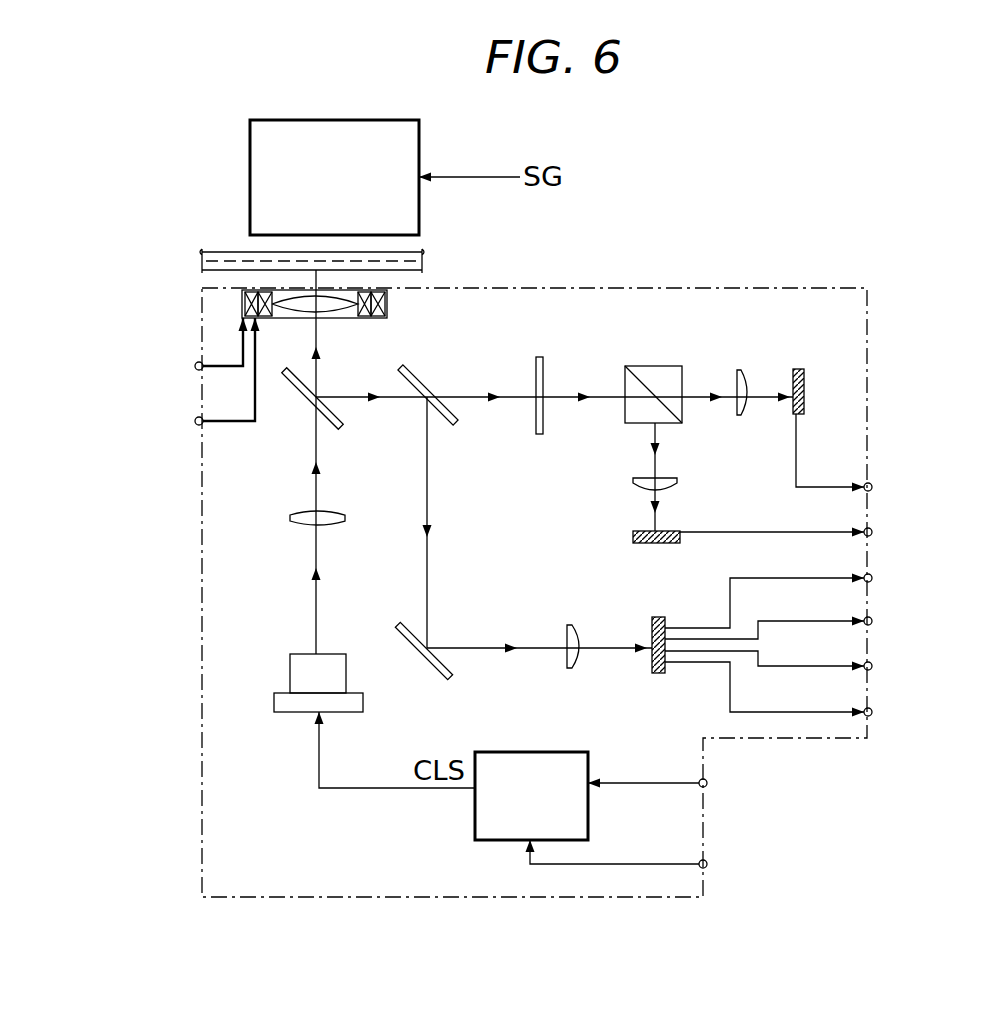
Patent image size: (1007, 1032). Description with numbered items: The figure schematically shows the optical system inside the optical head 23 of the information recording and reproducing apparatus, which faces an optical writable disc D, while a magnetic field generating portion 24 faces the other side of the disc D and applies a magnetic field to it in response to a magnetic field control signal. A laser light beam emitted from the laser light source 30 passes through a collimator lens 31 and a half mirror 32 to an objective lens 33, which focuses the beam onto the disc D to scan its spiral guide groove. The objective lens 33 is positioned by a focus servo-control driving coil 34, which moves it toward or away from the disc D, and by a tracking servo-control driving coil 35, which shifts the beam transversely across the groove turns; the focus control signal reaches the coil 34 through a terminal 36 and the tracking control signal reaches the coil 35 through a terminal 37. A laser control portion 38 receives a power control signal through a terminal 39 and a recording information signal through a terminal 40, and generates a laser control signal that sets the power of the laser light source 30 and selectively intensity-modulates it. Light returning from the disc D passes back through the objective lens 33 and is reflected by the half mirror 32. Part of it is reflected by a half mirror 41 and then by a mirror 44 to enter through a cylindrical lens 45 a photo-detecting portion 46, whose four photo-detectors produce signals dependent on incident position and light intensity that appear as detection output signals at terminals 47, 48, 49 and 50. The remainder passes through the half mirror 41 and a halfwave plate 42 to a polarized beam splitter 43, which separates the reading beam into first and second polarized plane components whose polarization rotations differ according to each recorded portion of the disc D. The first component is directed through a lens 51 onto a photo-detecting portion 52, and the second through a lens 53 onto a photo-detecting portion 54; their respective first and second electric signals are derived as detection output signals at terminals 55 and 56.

The optical head 23 is at (203, 870).
The magnetic field generating portion 24 is at (250, 196).
The optical writable disc D is at (214, 252).
The laser light source 30 is at (290, 665).
The collimator lens 31 is at (306, 524).
The half mirror 32 is at (336, 430).
The objective lens 33 is at (333, 307).
The focus servo-control driving coil 34 is at (257, 320).
The tracking servo-control driving coil 35 is at (243, 303).
The terminal 36 is at (197, 428).
The terminal 37 is at (197, 360).
The laser control portion 38 is at (561, 752).
The terminal 39 is at (705, 872).
The terminal 40 is at (705, 790).
The half mirror 41 is at (412, 376).
The halfwave plate 42 is at (532, 366).
The polarized beam splitter 43 is at (637, 366).
The mirror 44 is at (438, 670).
The cylindrical lens 45 is at (573, 623).
The photo-detecting portion 46 is at (652, 618).
The terminal 47 is at (865, 574).
The terminal 48 is at (865, 617).
The terminal 49 is at (865, 662).
The terminal 50 is at (865, 708).
The lens 51 is at (736, 368).
The photo-detecting portion 52 is at (800, 367).
The lens 53 is at (639, 476).
The photo-detecting portion 54 is at (637, 531).
The terminal 55 is at (865, 483).
The terminal 56 is at (865, 528).